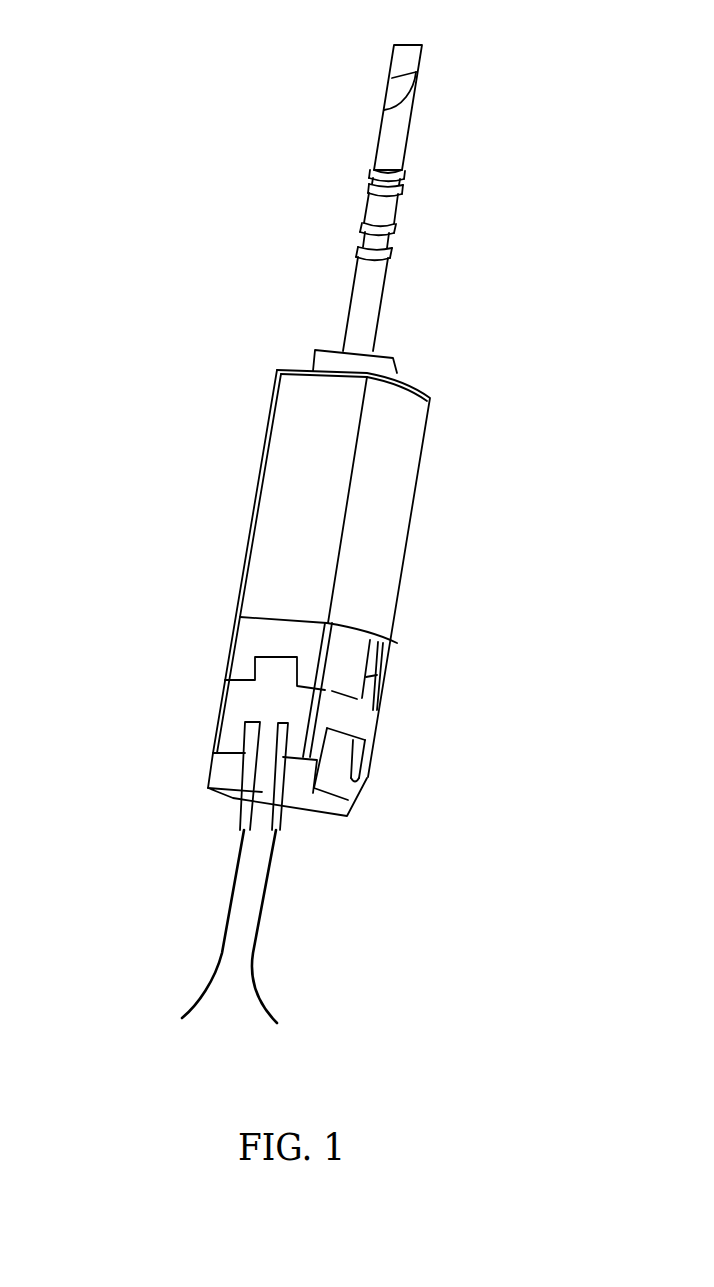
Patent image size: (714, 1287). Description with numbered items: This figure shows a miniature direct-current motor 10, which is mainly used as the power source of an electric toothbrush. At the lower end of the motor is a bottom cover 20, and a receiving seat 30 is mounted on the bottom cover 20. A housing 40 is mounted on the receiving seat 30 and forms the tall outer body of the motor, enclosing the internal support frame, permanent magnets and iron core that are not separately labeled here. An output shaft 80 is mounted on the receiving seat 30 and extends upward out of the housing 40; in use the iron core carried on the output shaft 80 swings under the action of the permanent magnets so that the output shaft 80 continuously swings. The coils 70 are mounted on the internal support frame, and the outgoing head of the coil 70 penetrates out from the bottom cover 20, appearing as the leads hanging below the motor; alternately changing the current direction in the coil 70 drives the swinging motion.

The miniature direct-current motor 10 is at (93, 47).
The bottom cover 20 is at (333, 795).
The receiving seat 30 is at (348, 663).
The housing 40 is at (385, 565).
The coil 70 is at (263, 905).
The output shaft 80 is at (365, 313).